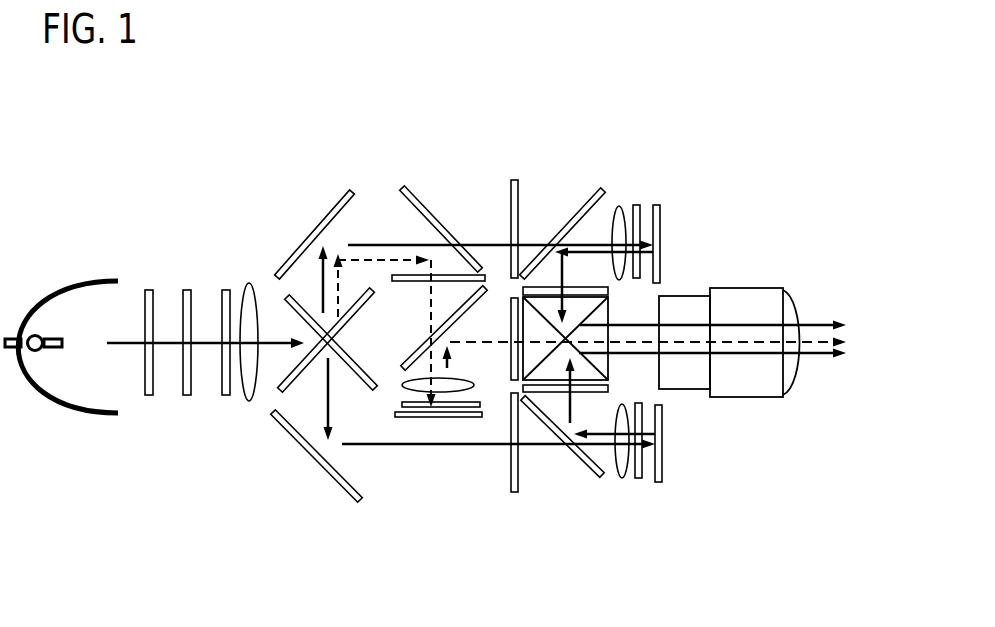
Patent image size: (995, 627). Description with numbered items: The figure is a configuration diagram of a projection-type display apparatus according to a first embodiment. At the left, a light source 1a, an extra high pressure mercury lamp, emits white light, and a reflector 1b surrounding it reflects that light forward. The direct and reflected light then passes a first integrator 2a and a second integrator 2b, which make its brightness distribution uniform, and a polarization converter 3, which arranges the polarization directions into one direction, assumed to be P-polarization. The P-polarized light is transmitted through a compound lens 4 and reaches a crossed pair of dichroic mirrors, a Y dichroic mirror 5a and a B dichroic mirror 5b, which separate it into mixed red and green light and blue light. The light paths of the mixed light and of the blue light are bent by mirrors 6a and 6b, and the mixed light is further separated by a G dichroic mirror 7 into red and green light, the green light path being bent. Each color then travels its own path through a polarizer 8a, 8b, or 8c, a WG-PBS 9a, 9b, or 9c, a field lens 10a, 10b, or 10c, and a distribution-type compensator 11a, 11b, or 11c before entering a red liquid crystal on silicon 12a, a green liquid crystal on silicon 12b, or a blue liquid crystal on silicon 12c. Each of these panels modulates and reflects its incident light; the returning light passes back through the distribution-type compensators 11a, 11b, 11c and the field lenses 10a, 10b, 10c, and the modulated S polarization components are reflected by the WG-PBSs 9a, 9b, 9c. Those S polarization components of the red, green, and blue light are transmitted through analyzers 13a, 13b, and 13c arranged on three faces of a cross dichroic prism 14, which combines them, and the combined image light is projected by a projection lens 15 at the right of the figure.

The light source 1a is at (58, 350).
The reflector 1b is at (55, 288).
The first integrator 2a is at (150, 288).
The second integrator 2b is at (187, 288).
The polarization converter 3 is at (227, 289).
The compound lens 4 is at (248, 401).
The Y dichroic mirror 5a is at (280, 394).
The B dichroic mirror 5b is at (283, 296).
The mirror 6a is at (318, 225).
The mirror 6b is at (332, 475).
The G dichroic mirror 7 is at (403, 185).
The polarizer 8a is at (513, 180).
The polarizer 8b is at (413, 275).
The polarizer 8c is at (514, 493).
The WG-PBS 9a is at (596, 187).
The WG-PBS 9b is at (480, 304).
The WG-PBS 9c is at (594, 476).
The field lens 10a is at (619, 206).
The field lens 10b is at (402, 388).
The field lens 10c is at (622, 480).
The distribution-type compensator 11a is at (636, 205).
The distribution-type compensator 11b is at (415, 410).
The distribution-type compensator 11c is at (639, 480).
The red liquid crystal on silicon 12a is at (660, 233).
The green liquid crystal on silicon 12b is at (480, 420).
The blue liquid crystal on silicon 12c is at (658, 485).
The analyzer 13a is at (612, 291).
The analyzer 13b is at (510, 357).
The analyzer 13c is at (587, 393).
The cross dichroic prism 14 is at (611, 362).
The projection lens 15 is at (773, 398).